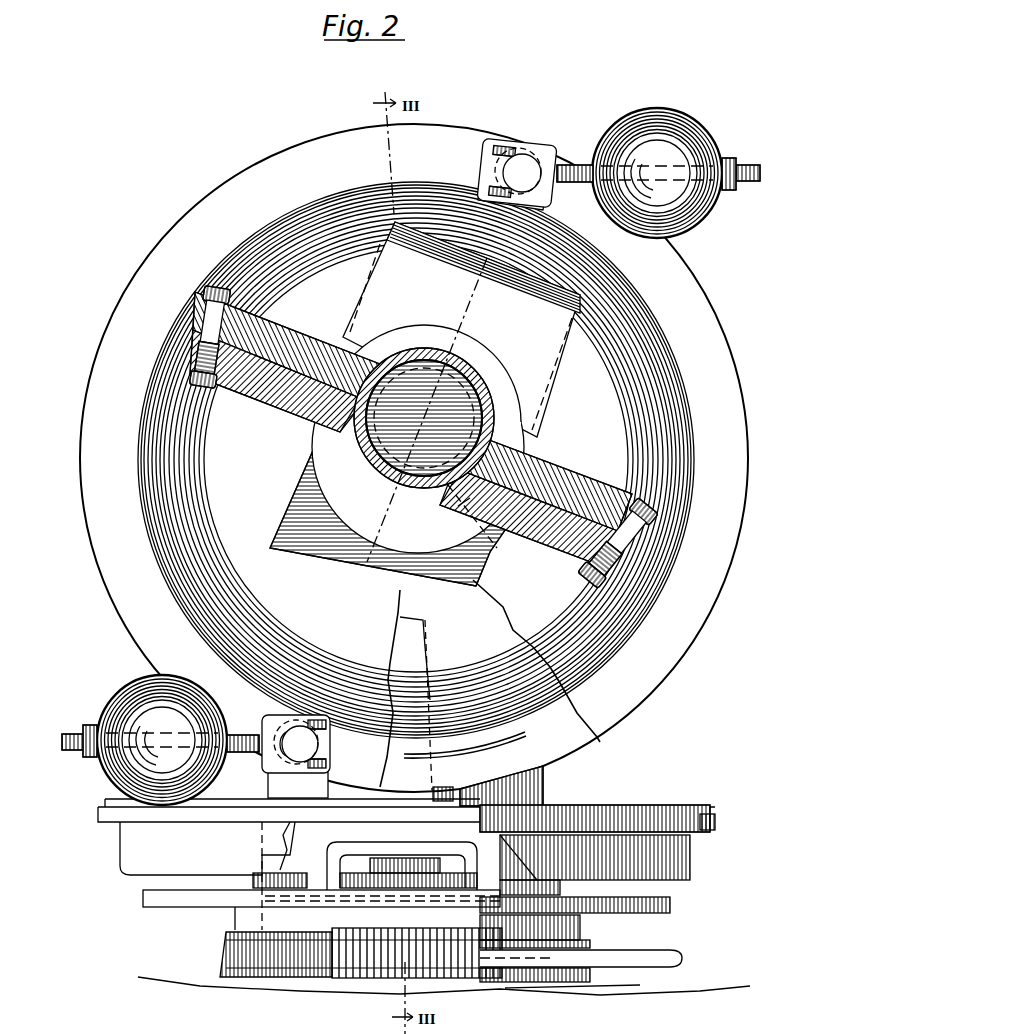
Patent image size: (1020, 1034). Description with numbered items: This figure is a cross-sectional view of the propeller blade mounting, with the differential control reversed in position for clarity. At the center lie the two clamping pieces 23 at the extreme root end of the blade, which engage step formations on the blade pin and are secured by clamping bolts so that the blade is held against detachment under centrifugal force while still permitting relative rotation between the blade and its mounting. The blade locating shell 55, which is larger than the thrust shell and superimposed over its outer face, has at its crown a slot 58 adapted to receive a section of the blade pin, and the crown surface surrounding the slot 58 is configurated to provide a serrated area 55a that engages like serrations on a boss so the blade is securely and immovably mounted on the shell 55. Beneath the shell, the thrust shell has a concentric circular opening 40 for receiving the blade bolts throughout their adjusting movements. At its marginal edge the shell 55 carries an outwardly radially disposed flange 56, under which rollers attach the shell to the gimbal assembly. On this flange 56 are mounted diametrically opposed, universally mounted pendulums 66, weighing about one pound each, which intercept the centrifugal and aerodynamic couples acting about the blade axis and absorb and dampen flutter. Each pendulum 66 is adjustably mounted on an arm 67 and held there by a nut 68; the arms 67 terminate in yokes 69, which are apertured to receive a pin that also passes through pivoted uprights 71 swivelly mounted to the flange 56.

The clamping pieces 23 is at (262, 382).
The concentric circular opening 40 is at (484, 526).
The blade locating shell 55 is at (206, 454).
The serrated area 55a is at (296, 545).
The flange 56 is at (177, 234).
The slot 58 is at (401, 536).
The pendulums 66 is at (688, 138).
The arms 67 is at (757, 176).
The nuts 68 is at (731, 160).
The yokes 69 is at (546, 152).
The pivoted uprights 71 is at (506, 171).